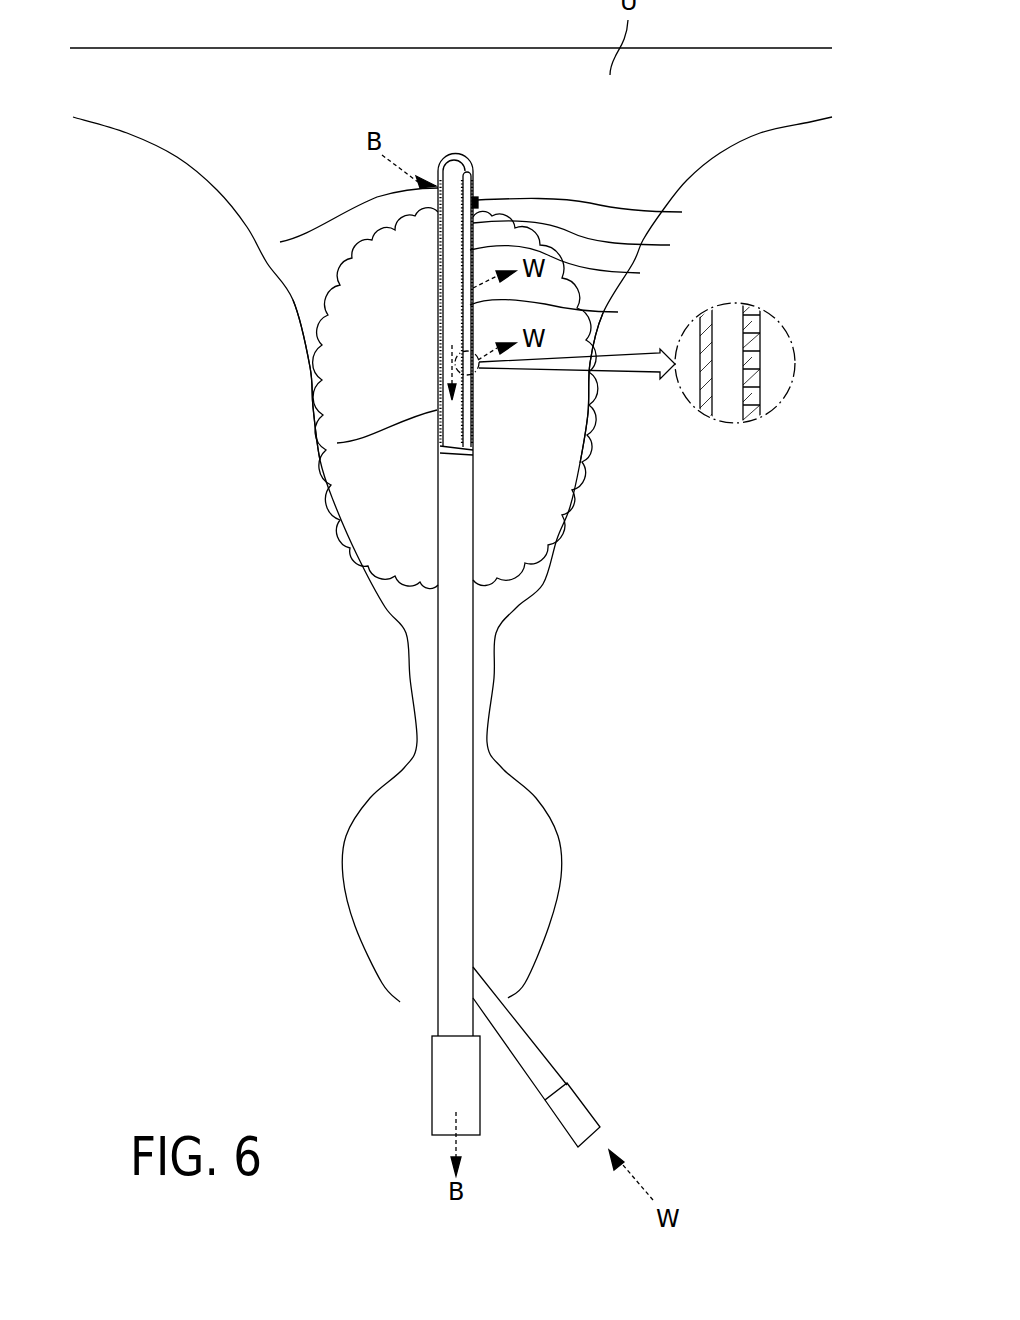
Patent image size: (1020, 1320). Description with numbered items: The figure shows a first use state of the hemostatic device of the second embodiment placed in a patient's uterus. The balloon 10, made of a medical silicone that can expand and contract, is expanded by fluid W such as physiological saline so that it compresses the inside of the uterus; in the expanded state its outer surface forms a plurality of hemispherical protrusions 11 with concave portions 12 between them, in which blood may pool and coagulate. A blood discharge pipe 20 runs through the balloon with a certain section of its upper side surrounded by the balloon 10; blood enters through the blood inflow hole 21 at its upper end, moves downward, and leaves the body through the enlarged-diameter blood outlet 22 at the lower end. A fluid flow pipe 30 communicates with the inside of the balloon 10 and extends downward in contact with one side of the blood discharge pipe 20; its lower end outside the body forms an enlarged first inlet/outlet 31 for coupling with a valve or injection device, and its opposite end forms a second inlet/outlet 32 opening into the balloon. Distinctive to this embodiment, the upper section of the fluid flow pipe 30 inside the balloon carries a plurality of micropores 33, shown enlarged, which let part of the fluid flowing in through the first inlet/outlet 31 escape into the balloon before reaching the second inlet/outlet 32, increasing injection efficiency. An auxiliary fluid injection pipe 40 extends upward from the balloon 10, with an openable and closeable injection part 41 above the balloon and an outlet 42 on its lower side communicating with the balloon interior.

The balloon 10 is at (337, 378).
The protrusions 11 is at (317, 333).
The concave portions 12 is at (322, 318).
The blood discharge pipe 20 is at (337, 443).
The blood inflow hole 21 is at (280, 243).
The blood outlet 22 is at (450, 1140).
The fluid flow pipe 30 is at (520, 1040).
The first inlet/outlet 31 is at (600, 1133).
The second inlet/outlet 32 is at (562, 314).
The micropores 33 is at (757, 323).
The auxiliary fluid injection pipe 40 is at (589, 240).
The injection part 41 is at (598, 212).
The outlet 42 is at (573, 267).